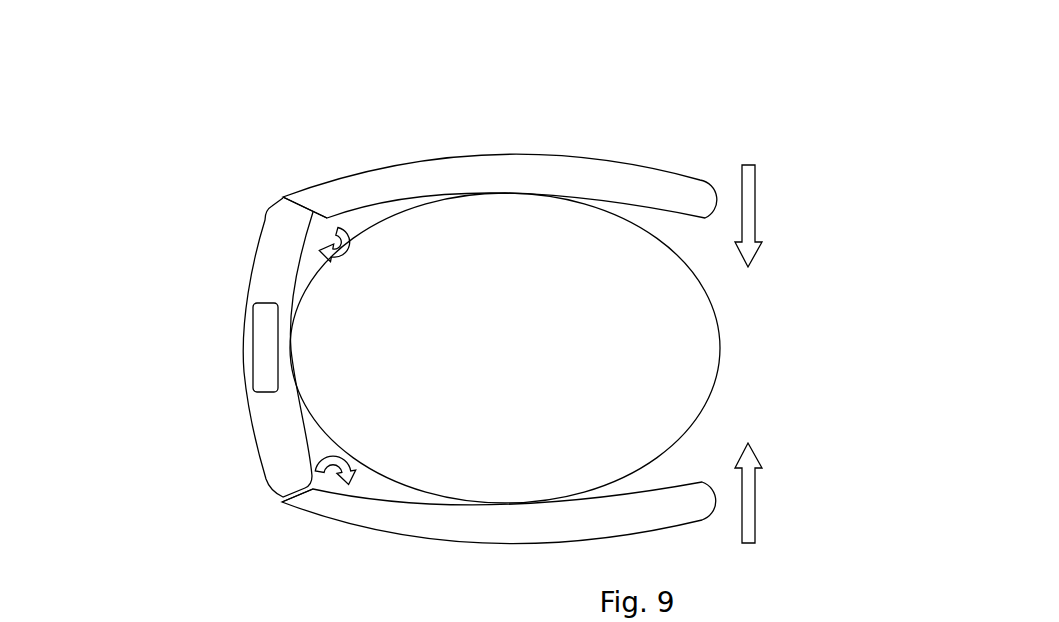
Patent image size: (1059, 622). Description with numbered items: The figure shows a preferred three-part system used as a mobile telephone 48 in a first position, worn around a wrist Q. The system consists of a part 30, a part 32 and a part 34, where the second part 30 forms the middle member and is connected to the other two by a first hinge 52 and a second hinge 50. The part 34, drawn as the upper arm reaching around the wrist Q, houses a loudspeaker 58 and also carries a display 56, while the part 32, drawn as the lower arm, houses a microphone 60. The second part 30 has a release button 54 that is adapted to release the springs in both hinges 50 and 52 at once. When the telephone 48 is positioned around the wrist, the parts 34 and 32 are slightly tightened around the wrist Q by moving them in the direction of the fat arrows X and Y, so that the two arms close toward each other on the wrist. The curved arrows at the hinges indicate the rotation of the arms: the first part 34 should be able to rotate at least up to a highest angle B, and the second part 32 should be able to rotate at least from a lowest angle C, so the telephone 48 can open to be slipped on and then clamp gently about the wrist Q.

The part 30 is at (268, 261).
The part 32 is at (492, 535).
The part 34 is at (468, 191).
The mobile telephone 48 is at (178, 205).
The second hinge 50 is at (265, 508).
The first hinge 52 is at (279, 193).
The release button 54 is at (247, 343).
The display 56 is at (599, 130).
The loudspeaker 58 is at (318, 171).
The microphone 60 is at (684, 466).
The wrist Q is at (480, 346).
The highest angle B is at (346, 221).
The lowest angle C is at (328, 469).
The fat arrow X is at (757, 216).
The fat arrow Y is at (758, 493).